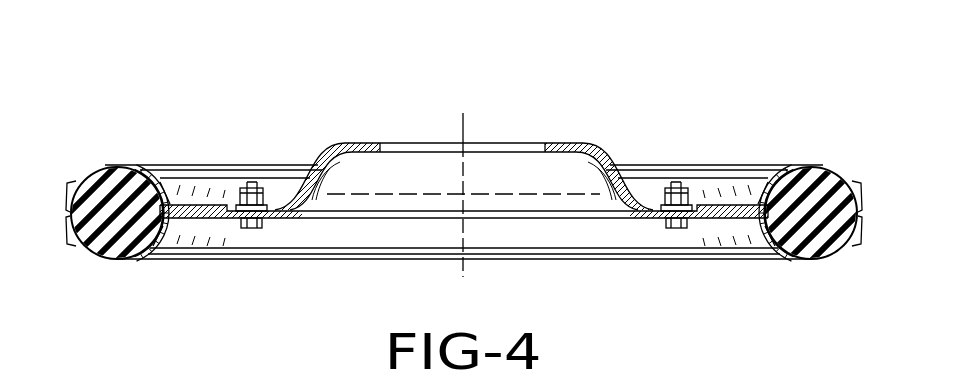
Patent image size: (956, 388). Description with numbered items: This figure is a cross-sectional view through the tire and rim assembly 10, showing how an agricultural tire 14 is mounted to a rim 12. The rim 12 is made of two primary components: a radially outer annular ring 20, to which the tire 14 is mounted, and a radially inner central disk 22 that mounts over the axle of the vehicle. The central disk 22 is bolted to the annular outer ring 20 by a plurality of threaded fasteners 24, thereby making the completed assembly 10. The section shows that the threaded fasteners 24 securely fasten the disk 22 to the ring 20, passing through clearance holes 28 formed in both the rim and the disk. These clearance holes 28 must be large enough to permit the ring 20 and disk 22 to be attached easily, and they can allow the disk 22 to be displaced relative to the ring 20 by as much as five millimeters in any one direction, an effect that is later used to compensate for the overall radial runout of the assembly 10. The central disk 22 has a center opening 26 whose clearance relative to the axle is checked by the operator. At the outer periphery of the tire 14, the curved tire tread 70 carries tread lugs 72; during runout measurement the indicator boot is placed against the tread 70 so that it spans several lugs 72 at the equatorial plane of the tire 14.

The tire and rim assembly 10 is at (126, 100).
The rim 12 is at (719, 193).
The agricultural tire 14 is at (817, 157).
The annular outer ring 20 is at (198, 192).
The central disk 22 is at (592, 148).
The threaded fasteners 24 is at (247, 186).
The center disk opening 26 is at (420, 151).
The clearance holes 28 is at (256, 215).
The tire tread 70 is at (78, 166).
The tread lugs 72 is at (73, 247).